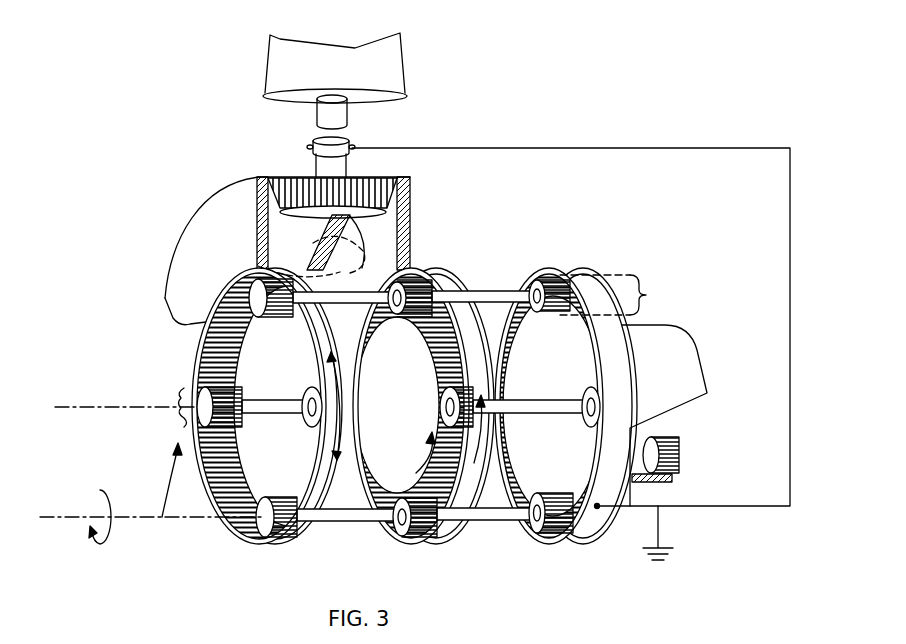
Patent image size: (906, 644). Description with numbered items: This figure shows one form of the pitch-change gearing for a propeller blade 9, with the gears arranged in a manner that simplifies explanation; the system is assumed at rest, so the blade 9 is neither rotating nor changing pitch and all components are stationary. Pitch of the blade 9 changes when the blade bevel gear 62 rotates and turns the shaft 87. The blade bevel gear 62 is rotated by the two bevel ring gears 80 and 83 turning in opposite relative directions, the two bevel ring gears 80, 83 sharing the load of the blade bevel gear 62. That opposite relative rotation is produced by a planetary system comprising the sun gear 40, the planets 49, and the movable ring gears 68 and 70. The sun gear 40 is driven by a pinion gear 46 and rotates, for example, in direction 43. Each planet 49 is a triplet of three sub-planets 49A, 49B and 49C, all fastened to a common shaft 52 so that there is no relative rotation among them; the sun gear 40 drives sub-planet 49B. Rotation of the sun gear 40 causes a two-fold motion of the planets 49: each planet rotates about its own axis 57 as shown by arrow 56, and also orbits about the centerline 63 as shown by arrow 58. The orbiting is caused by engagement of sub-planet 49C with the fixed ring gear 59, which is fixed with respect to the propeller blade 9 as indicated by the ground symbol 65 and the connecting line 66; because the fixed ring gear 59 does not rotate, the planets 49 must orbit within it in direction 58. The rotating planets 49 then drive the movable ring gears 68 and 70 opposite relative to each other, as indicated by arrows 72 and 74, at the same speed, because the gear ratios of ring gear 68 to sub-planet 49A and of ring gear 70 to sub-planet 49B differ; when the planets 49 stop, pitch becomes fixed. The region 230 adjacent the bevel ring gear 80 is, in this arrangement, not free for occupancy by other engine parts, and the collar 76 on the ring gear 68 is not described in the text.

The blade 9 is at (339, 77).
The shaft 87 is at (340, 110).
The blade bevel gear 62 is at (298, 176).
The connecting line 66 is at (790, 347).
The ground symbol 65 is at (660, 522).
The bevel ring gear 80 is at (231, 250).
The region 230 is at (257, 262).
The bevel ring gear 83 is at (410, 180).
The common shaft 52 is at (370, 297).
The fixed ring gear 59 is at (567, 538).
The movable ring gear 70 is at (437, 538).
The movable ring gear 68 is at (287, 540).
The centerline 63 is at (72, 407).
The sub-planet 49A is at (305, 318).
The axis 57 is at (125, 522).
The bearing collar 76 is at (335, 370).
The sub-planet 49B is at (413, 270).
The sub-planet 49C is at (561, 307).
The planet gears 49 is at (648, 295).
The sun gear 40 is at (423, 440).
The arrow 72 is at (330, 438).
The arrow 74 is at (479, 443).
The direction 43 is at (420, 457).
The arrow 58 is at (173, 477).
The arrow 56 is at (97, 490).
The pinion gear 46 is at (662, 437).